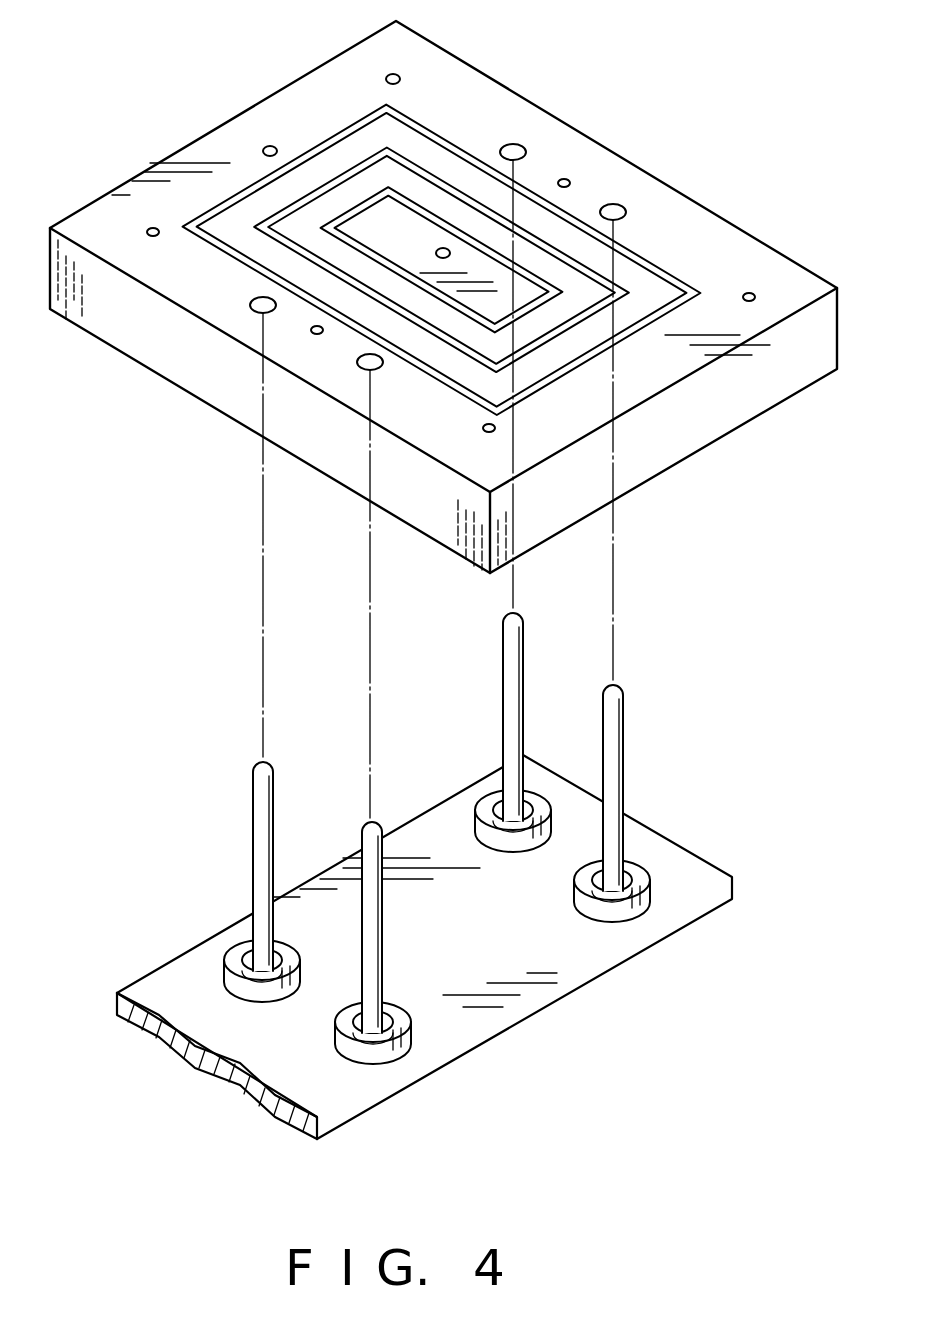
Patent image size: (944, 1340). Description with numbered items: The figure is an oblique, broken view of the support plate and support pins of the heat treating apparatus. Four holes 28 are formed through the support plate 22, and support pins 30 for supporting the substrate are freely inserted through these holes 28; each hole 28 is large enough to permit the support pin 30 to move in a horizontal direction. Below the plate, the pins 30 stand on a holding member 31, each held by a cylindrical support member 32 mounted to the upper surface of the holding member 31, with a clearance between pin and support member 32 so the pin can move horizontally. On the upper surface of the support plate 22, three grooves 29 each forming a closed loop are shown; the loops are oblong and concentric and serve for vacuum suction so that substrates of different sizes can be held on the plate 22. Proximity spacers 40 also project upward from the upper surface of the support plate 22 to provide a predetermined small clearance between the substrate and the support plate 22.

The support plate 22 is at (518, 108).
The holes 28 is at (250, 303).
The grooves 29 is at (463, 228).
The support pins 30 is at (348, 862).
The holding member 31 is at (557, 955).
The support member 32 is at (333, 1025).
The proximity spacers 40 is at (386, 76).